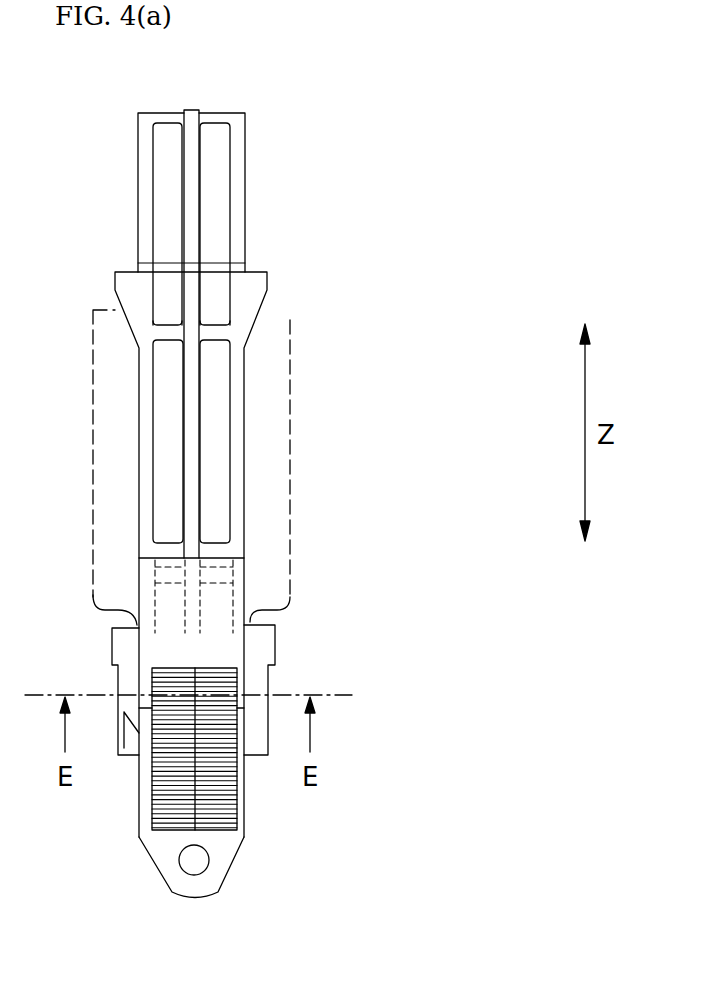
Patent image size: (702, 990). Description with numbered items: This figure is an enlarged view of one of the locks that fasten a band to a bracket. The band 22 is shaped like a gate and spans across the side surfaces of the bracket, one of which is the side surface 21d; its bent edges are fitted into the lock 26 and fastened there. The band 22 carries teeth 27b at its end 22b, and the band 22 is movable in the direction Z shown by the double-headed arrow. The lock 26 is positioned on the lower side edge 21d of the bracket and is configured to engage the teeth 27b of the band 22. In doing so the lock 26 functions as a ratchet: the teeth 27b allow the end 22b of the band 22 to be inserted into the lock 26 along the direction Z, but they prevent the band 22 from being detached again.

The band 22 is at (132, 172).
The side surface of the bracket 21d is at (289, 331).
The end of the band 22b is at (220, 443).
The lock 26 is at (265, 643).
The teeth 27b is at (207, 758).